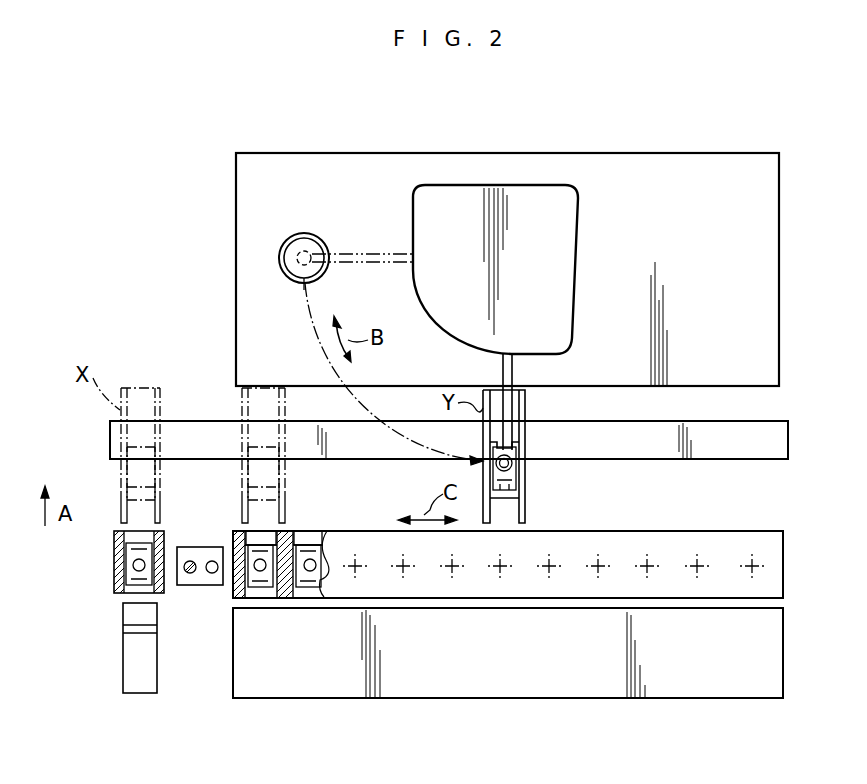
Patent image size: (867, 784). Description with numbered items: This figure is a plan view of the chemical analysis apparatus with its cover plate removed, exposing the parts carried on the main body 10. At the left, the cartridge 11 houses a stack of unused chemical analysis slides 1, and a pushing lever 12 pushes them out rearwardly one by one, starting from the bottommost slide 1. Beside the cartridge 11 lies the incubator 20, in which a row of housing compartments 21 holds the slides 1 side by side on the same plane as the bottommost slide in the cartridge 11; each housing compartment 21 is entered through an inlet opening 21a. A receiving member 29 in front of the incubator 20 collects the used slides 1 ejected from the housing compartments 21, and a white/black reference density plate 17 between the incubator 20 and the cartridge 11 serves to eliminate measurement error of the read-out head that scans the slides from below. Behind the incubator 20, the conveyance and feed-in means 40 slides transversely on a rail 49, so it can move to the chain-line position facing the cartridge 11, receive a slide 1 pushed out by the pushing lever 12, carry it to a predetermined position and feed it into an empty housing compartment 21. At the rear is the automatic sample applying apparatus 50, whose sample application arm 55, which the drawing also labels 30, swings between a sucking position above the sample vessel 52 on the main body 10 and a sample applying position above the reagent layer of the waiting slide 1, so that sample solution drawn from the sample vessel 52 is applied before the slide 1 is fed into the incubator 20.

The main body 10 is at (330, 152).
The sample vessel 52 is at (303, 236).
The sample application arm 55 is at (370, 252).
The transfer arm 30 is at (503, 368).
The automatic sample applying apparatus 50 is at (596, 255).
The conveyance and feed-in means 40 is at (522, 415).
The rail 49 is at (423, 448).
The chemical analysis slide 1 is at (512, 472).
The cartridge 11 is at (118, 555).
The white/black reference density plate 17 is at (205, 587).
The pushing lever 12 is at (150, 672).
The incubator 20 is at (575, 551).
The housing compartment 21 is at (306, 598).
The inlet opening 21a is at (258, 530).
The receiving member 29 is at (598, 683).